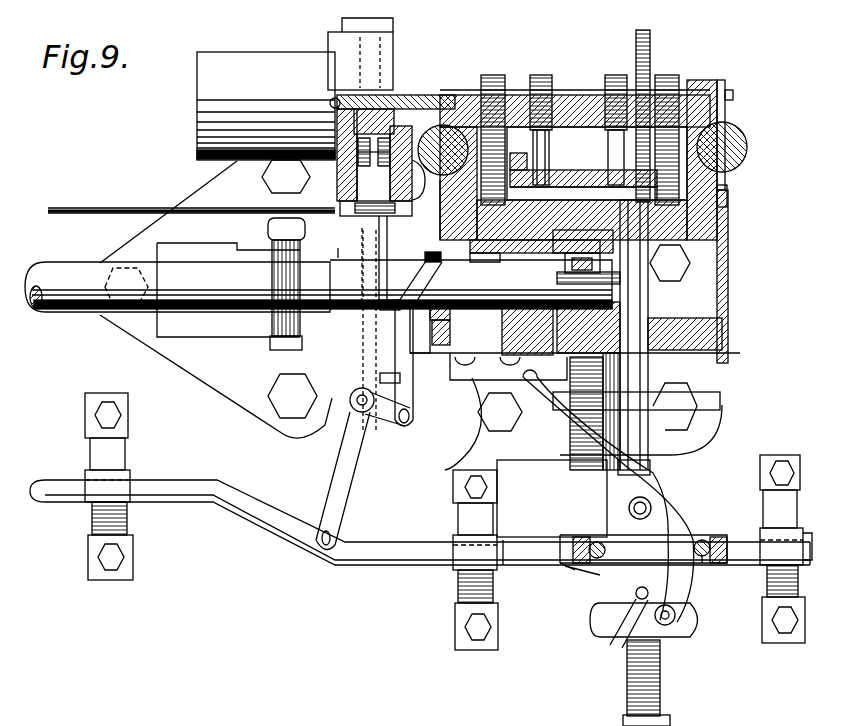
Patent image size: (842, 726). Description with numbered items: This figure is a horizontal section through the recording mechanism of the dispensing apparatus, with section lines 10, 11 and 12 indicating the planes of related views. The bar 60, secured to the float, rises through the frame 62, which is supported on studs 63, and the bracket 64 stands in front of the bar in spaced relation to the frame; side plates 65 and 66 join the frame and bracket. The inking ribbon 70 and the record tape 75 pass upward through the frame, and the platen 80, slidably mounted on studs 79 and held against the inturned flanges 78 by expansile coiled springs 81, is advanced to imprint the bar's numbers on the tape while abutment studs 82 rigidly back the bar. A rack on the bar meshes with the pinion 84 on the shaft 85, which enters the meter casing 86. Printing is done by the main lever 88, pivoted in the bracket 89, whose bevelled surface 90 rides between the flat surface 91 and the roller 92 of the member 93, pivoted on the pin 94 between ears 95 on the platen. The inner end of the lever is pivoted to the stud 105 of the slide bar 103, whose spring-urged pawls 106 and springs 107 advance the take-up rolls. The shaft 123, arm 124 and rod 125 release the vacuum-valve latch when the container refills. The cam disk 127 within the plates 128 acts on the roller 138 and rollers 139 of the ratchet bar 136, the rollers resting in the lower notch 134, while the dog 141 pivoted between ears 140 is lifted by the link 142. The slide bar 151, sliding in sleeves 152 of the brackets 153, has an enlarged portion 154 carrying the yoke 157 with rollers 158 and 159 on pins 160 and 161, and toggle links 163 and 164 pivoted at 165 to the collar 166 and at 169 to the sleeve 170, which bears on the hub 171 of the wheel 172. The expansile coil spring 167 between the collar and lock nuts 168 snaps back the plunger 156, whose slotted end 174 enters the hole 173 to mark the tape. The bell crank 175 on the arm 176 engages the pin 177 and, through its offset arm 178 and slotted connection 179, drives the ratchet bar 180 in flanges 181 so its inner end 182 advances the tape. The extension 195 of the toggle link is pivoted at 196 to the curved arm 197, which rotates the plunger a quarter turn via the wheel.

The section line 10 is at (278, 545).
The section line 11 is at (372, 10).
The section line 12 is at (588, 38).
The bar 60 is at (535, 135).
The frame 62 is at (700, 88).
The studs 63 is at (443, 124).
The bracket 64 is at (725, 346).
The side plate 65 is at (500, 412).
The side plate 66 is at (728, 278).
The inking ribbon 70 is at (565, 184).
The record tape 75 is at (548, 172).
The inturned flanges 78 is at (690, 266).
The studs 79 is at (452, 238).
The platen 80 is at (540, 246).
The expansile coiled springs 81 is at (492, 150).
The abutment studs 82 is at (620, 100).
The pinion 84 is at (650, 42).
The shaft 85 is at (400, 98).
The casing 86 is at (212, 93).
The main lever 88 is at (60, 318).
The bracket 89 is at (265, 320).
The bevelled surface 90 is at (557, 284).
The flat surface 91 is at (535, 411).
The roller 92 is at (610, 296).
The member 93 is at (600, 270).
The pin 94 is at (548, 256).
The ears 95 is at (552, 280).
The slide bar 103 is at (477, 424).
The stud 105 is at (430, 312).
The pawls 106 is at (420, 345).
The springs 107 is at (432, 332).
The shaft 123 is at (145, 208).
The arm 124 is at (268, 236).
The rod 125 is at (338, 258).
The cam disk 127 is at (340, 100).
The plates 128 is at (362, 66).
The lower notch 134 is at (268, 192).
The ratchet bar 136 is at (410, 190).
The roller 138 is at (360, 140).
The rollers 139 is at (358, 160).
The ears 140 is at (372, 212).
The dog 141 is at (388, 230).
The link 142 is at (357, 264).
The slide bar 151 is at (185, 500).
The sleeves 152 is at (118, 498).
The brackets 153 is at (456, 620).
The enlarged portion 154 is at (518, 570).
The plunger 156 is at (648, 372).
The yoke 157 is at (580, 545).
The roller 158 is at (578, 565).
The roller 159 is at (703, 558).
The pin 160 is at (590, 578).
The pin 161 is at (704, 541).
The toggle links 163 is at (600, 530).
The toggle links 164 is at (640, 565).
The pivot 165 is at (636, 596).
The collar 166 is at (605, 630).
The expansile coil spring 167 is at (660, 676).
The lock nuts 168 is at (665, 720).
The pivot 169 is at (652, 506).
The sleeve 170 is at (655, 468).
The hub 171 is at (665, 440).
The wheel 172 is at (715, 410).
The hole 173 is at (727, 195).
The slot 174 is at (670, 263).
The bell crank 175 is at (350, 448).
The arm 176 is at (440, 420).
The pin 177 is at (332, 535).
The upwardly offset inner arm 178 is at (372, 412).
The slotted connection 179 is at (412, 414).
The ratchet bar 180 is at (292, 396).
The flanges 181 is at (380, 305).
The inner end 182 is at (425, 256).
The extension 195 is at (645, 603).
The pivot 196 is at (676, 618).
The curved arm 197 is at (560, 445).